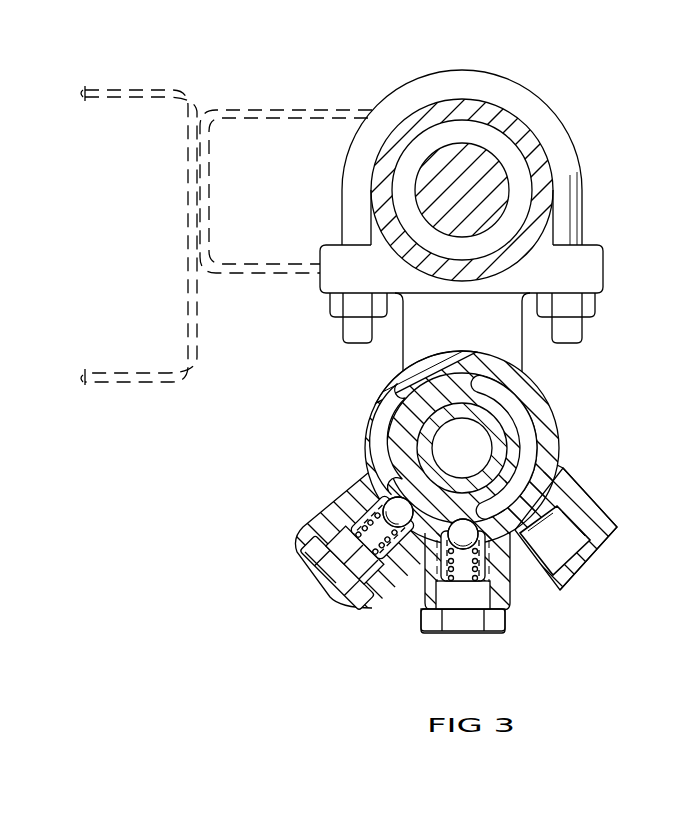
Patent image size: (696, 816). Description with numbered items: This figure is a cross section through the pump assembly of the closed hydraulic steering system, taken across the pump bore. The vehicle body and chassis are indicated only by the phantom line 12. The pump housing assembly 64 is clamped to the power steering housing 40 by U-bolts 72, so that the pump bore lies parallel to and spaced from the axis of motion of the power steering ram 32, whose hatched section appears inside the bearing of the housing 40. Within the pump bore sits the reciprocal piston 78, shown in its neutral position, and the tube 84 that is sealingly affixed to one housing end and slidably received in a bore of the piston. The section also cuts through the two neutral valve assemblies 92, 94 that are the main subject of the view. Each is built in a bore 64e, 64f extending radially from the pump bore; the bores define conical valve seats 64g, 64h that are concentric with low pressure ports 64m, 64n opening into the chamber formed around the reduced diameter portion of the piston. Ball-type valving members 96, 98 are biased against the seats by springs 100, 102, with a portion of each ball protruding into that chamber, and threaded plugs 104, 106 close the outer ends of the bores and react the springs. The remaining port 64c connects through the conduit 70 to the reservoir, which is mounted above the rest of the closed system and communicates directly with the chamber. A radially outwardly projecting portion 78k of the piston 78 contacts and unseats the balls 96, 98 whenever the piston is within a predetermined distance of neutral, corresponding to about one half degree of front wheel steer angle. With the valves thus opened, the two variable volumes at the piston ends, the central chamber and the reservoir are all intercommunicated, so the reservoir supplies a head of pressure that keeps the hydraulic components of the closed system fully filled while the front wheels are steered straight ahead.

The phantom line 12 is at (246, 106).
The ram 32 is at (427, 160).
The power steering housing 40 is at (480, 100).
The U-bolts 72 is at (561, 122).
The reciprocal piston 78 is at (532, 393).
The radially outwardly projecting portion 78k is at (540, 440).
The housing assembly 64 is at (348, 408).
The low pressure port 64m is at (392, 462).
The low pressure port 64n is at (560, 470).
The conical valve seat 64g is at (370, 482).
The conical valve seat 64h is at (426, 588).
The port 64c is at (600, 566).
The bore 64e is at (356, 530).
The bore 64f is at (490, 610).
The tube 84 is at (491, 436).
The ball-type valving member 96 is at (400, 509).
The ball-type valving member 98 is at (485, 530).
The neutral valve assembly 92 is at (336, 496).
The neutral valve assembly 94 is at (425, 600).
The spring 100 is at (332, 572).
The spring 102 is at (522, 572).
The threaded plug 104 is at (326, 590).
The threaded plug 106 is at (462, 632).
The conduit 70 is at (590, 570).